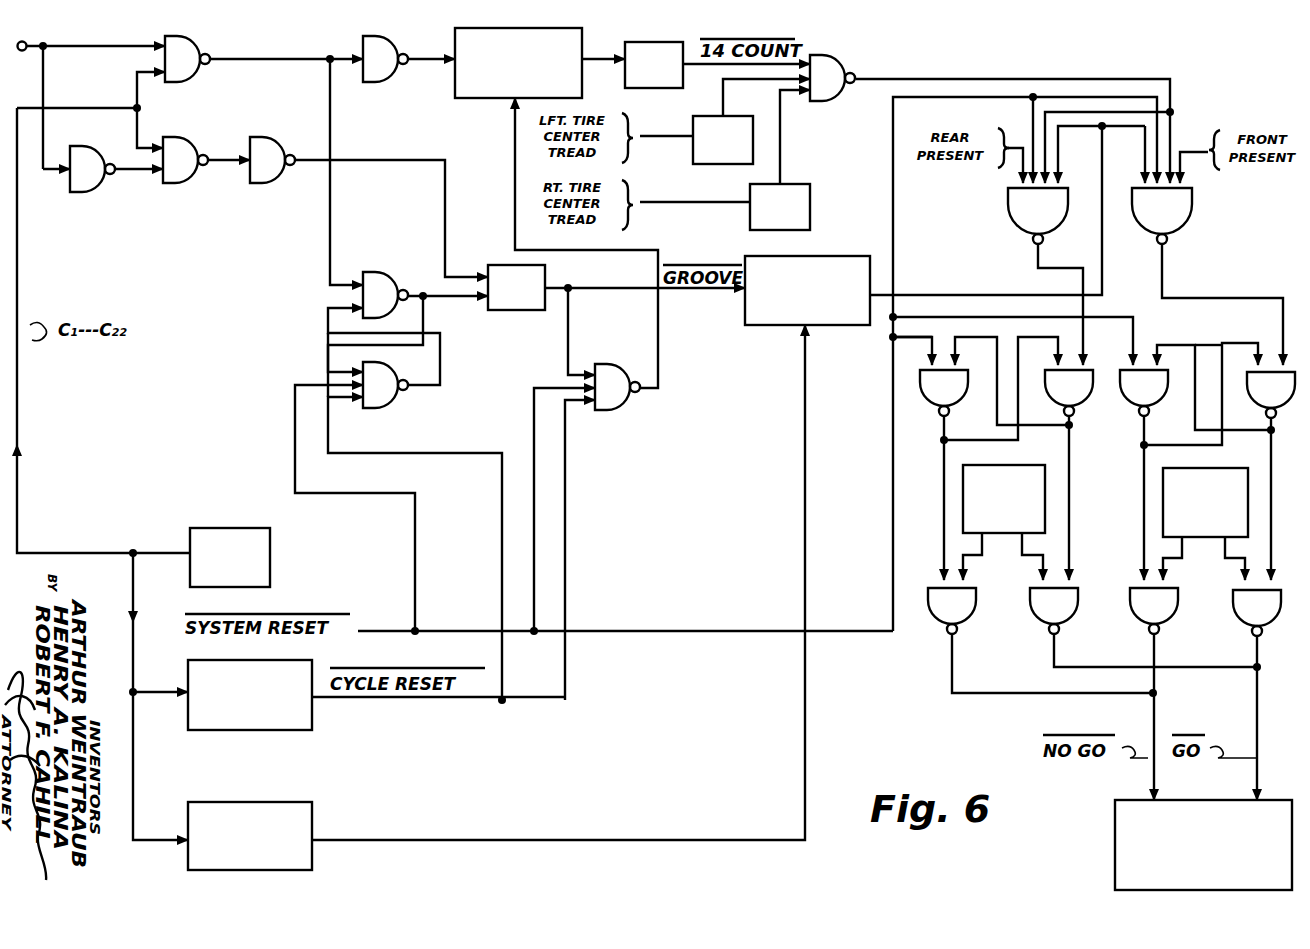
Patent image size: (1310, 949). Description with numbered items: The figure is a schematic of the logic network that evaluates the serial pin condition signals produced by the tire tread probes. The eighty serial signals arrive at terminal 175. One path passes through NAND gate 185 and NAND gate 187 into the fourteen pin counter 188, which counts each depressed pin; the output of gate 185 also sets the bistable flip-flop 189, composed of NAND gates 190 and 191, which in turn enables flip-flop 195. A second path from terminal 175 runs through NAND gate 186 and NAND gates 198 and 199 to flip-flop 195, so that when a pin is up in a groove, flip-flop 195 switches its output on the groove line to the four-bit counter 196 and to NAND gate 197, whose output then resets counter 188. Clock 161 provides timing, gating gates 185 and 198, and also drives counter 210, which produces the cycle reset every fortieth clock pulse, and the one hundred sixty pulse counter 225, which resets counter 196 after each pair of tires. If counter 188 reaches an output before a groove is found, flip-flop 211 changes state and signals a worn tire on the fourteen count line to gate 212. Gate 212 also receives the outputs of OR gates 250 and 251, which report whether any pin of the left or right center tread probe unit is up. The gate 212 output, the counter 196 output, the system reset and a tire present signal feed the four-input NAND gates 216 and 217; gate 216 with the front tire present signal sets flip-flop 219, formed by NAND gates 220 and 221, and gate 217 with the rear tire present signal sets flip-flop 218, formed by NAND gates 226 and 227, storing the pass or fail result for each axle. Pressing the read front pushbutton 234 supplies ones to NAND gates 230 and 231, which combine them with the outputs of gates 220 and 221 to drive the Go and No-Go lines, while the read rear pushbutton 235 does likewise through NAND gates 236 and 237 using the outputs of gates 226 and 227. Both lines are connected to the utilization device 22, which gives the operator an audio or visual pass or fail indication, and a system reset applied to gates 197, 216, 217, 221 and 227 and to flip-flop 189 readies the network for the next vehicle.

The terminal 175 is at (26, 42).
The NAND gate 185 is at (190, 45).
The NAND gate 186 is at (88, 186).
The NAND gate 187 is at (382, 80).
The 14 pin counter 188 is at (497, 98).
The bistable flip-flop 189 is at (318, 340).
The NAND gate 190 is at (385, 275).
The NAND gate 191 is at (388, 405).
The flip-flop 195 is at (507, 310).
The 4-bit counter 196 is at (840, 268).
The NAND gate 197 is at (608, 372).
The NAND gate 198 is at (178, 182).
The NAND gate 199 is at (268, 182).
The flip-flop 211 is at (633, 48).
The gate 212 is at (830, 62).
The NAND gate 216 is at (1180, 210).
The NAND gate 217 is at (1015, 207).
The flip-flop 218 is at (1013, 335).
The flip-flop 219 is at (1207, 352).
The NAND gate 220 is at (1262, 388).
The NAND gate 221 is at (1150, 408).
The NAND gate 226 is at (1080, 392).
The NAND gate 227 is at (935, 392).
The NAND gate 230 is at (1245, 614).
The NAND gate 231 is at (1168, 612).
The read front pushbutton 234 is at (1248, 462).
The read rear pushbutton 235 is at (1008, 470).
The NAND gate 236 is at (1066, 612).
The NAND gate 237 is at (965, 610).
The OR gate 250 is at (698, 116).
The OR gate 251 is at (752, 192).
The utilization device 22 is at (1125, 860).
The clock 161 is at (242, 517).
The counter 210 is at (222, 720).
The 160 pulse counter 225 is at (298, 810).